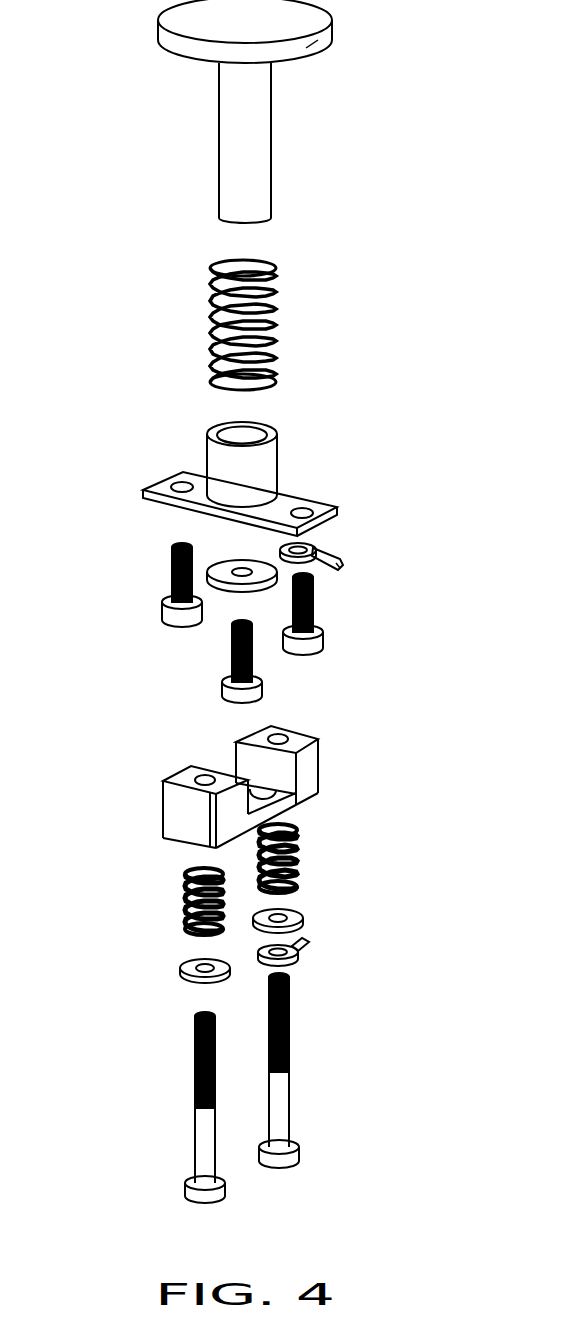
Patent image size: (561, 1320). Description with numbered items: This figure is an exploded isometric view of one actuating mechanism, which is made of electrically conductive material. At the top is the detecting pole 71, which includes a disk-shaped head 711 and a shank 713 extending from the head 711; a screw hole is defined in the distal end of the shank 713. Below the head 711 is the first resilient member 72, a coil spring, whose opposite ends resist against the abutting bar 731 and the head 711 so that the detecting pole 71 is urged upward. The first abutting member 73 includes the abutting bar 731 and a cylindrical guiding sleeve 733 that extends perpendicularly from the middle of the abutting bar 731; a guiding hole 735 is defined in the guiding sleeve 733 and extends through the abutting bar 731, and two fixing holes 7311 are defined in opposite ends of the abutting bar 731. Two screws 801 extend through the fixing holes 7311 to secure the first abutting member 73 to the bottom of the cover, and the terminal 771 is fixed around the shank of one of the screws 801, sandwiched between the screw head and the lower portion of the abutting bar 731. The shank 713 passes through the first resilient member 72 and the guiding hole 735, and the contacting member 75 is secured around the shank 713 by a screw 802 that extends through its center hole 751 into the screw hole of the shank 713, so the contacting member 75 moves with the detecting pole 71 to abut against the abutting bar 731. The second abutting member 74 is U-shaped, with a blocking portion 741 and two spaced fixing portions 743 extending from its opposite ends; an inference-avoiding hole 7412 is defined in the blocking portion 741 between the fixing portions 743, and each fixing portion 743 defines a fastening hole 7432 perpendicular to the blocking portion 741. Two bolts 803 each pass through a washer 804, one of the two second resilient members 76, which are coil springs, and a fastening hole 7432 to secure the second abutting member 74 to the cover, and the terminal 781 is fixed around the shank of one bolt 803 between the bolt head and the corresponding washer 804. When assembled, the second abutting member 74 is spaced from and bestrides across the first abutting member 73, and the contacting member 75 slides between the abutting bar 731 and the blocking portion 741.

The detecting pole 71 is at (328, 111).
The head 711 is at (310, 46).
The shank 713 is at (327, 143).
The first resilient member 72 is at (277, 292).
The first abutting member 73 is at (282, 437).
The guiding sleeve 733 is at (280, 422).
The guiding hole 735 is at (225, 433).
The abutting bar 731 is at (246, 478).
The fixing holes 7311 is at (178, 483).
The contacting member 75 is at (167, 592).
The center hole 751 is at (237, 570).
The terminal 771 is at (317, 546).
The screws 801 is at (312, 643).
The screw 802 is at (252, 663).
The second abutting member 74 is at (277, 769).
The fixing portions 743 is at (311, 757).
The blocking portion 741 is at (239, 769).
The inference-avoiding hole 7412 is at (258, 795).
The fastening hole 7432 is at (186, 768).
The second resilient members 76 is at (297, 866).
The terminal 781 is at (307, 948).
The bolts 803 is at (278, 1093).
The washers 804 is at (180, 967).